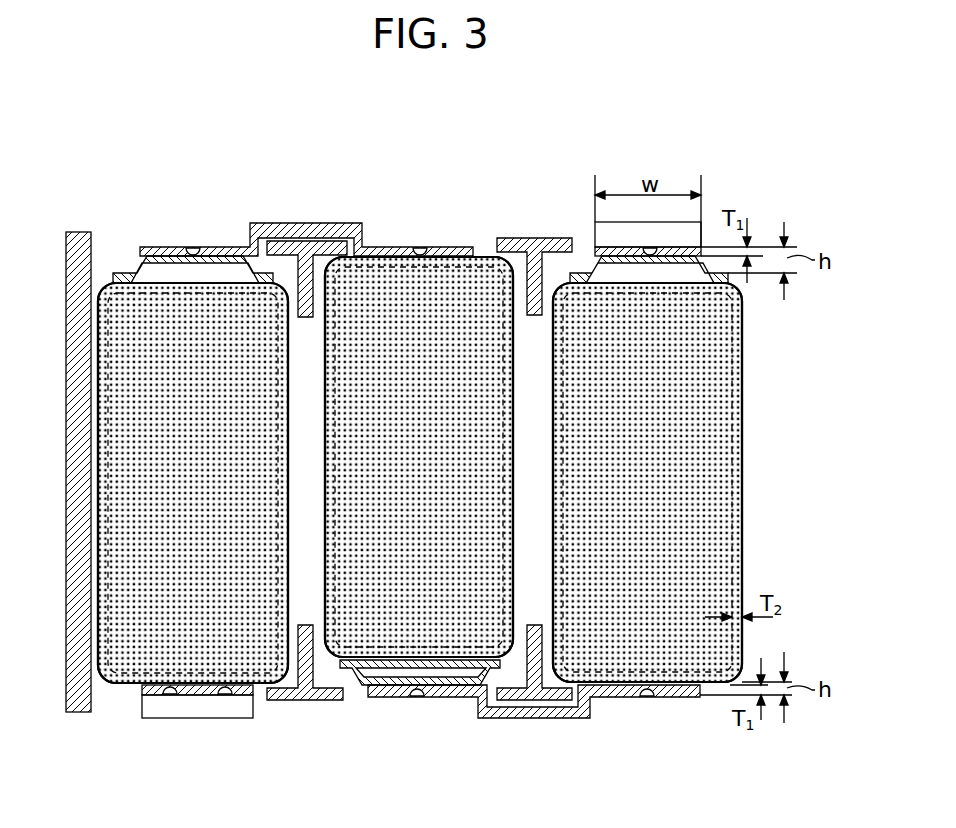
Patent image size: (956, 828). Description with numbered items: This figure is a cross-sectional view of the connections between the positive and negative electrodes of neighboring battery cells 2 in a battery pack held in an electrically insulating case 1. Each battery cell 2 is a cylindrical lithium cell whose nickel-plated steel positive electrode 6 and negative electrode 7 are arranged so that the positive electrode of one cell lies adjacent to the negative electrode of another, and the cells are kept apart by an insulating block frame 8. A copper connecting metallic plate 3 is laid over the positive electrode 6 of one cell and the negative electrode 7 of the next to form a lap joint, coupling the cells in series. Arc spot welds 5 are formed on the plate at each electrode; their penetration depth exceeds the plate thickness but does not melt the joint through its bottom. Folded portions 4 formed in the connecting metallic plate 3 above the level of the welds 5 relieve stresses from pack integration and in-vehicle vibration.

The electrically insulating case 1 is at (78, 232).
The battery cell 2 is at (108, 455).
The connecting metallic plate 3 is at (327, 228).
The folded portion 4 is at (250, 223).
The weld 5 is at (193, 248).
The battery positive electrode 6 is at (130, 272).
The battery negative electrode 7 is at (483, 257).
The insulating block frame 8 is at (540, 238).